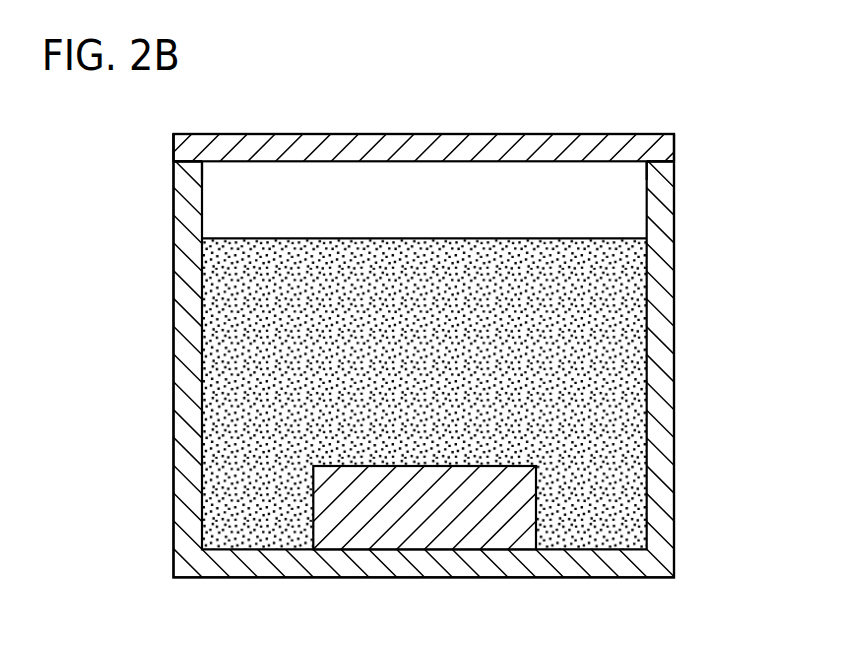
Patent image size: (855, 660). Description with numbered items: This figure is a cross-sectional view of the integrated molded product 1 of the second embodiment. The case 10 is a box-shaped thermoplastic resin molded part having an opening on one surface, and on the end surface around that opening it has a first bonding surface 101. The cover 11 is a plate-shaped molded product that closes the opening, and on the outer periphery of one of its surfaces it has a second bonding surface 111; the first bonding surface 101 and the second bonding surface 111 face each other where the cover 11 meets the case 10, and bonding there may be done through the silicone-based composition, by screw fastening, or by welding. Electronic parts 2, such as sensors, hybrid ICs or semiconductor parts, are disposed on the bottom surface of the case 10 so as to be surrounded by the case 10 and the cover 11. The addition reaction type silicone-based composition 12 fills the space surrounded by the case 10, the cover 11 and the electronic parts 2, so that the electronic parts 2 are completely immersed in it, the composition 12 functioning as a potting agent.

The integrated molded product 1 is at (634, 88).
The case 10 is at (180, 285).
The cover 11 is at (545, 148).
The second bonding surface 111 is at (181, 160).
The first bonding surface 101 is at (195, 168).
The addition reaction type silicone-based composition 12 is at (610, 320).
The electronic parts 2 is at (477, 526).